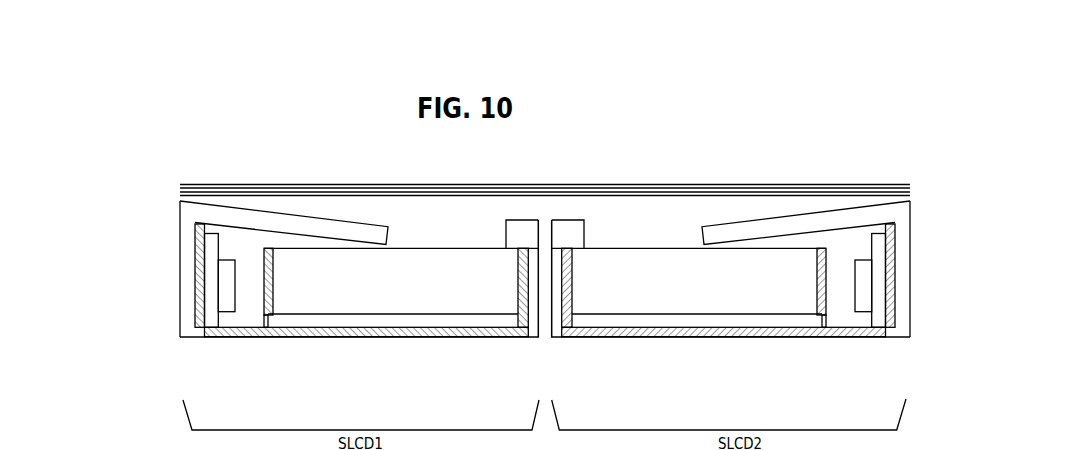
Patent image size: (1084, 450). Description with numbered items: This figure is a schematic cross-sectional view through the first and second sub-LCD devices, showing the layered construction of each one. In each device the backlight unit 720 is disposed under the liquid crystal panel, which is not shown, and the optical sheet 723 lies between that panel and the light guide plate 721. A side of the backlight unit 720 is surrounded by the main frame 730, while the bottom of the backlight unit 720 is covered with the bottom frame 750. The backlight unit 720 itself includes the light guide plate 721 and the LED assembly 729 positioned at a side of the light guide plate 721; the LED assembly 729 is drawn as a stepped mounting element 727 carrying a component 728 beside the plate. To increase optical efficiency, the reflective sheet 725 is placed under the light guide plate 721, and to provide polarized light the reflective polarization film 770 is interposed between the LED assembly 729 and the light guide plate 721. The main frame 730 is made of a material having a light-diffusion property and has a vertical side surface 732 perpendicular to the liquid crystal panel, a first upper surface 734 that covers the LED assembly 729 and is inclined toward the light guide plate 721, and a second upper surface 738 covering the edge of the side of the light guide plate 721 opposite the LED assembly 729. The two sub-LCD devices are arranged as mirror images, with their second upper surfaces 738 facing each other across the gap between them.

The backlight unit 720 is at (367, 326).
The light guide plate 721 is at (300, 315).
The optical sheet 723 is at (455, 186).
The reflective sheet 725 is at (372, 310).
The stepped support member 727 is at (212, 341).
The light source substrate 728 is at (230, 312).
The LED assembly 729 is at (222, 315).
The main frame 730 is at (237, 269).
The vertical side surface 732 is at (186, 236).
The first upper surface 734 is at (233, 213).
The second upper surface 738 is at (515, 220).
The bottom frame 750 is at (485, 338).
The reflective polarization film 770 is at (266, 340).